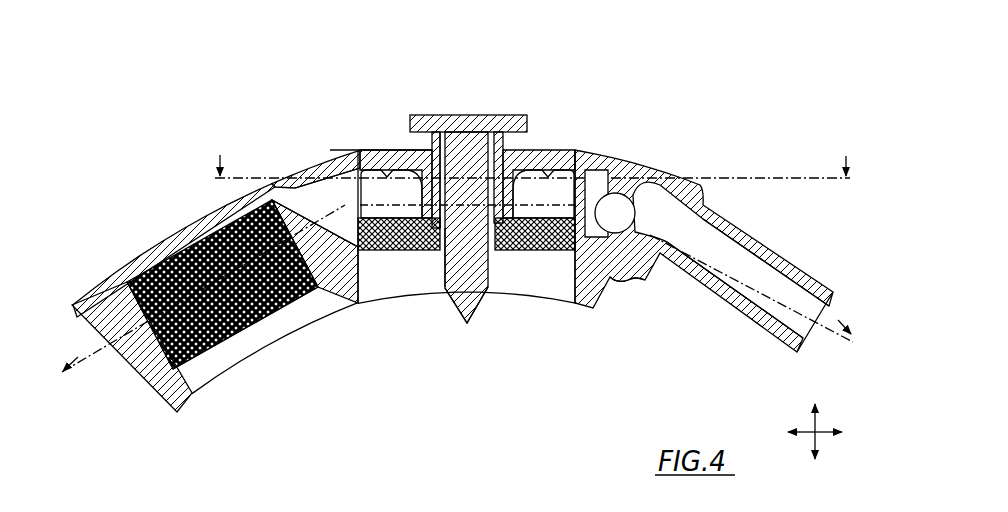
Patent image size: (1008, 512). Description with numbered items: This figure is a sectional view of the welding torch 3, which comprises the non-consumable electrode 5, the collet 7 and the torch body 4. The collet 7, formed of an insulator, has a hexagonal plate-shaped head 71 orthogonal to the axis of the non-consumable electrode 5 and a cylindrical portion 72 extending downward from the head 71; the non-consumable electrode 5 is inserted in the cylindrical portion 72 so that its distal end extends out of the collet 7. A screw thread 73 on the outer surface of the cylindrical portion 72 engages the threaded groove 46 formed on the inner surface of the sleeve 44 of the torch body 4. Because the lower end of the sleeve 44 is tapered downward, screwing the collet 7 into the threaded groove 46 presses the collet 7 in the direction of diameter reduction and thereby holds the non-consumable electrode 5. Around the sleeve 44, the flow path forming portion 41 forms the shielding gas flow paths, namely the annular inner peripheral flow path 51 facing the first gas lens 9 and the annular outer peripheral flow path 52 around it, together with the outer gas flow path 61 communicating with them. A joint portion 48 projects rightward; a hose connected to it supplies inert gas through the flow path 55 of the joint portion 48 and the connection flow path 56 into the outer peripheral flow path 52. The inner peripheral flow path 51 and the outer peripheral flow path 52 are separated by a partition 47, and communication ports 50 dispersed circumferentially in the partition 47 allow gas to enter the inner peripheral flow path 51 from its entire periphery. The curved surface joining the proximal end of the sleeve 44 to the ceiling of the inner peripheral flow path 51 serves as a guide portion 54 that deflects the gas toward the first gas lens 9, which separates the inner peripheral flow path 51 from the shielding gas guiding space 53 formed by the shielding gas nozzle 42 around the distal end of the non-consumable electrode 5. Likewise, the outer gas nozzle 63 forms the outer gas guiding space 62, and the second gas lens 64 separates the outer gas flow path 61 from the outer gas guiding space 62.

The welding torch 3 is at (750, 88).
The torch body 4 is at (620, 162).
The non-consumable electrode 5 is at (481, 296).
The collet 7 is at (429, 113).
The first gas lens 9 is at (583, 281).
The flow path forming portion 41 is at (134, 253).
The shielding gas nozzle 42 is at (355, 310).
The sleeve 44 is at (432, 236).
The threaded groove 46 is at (444, 115).
The partition 47 is at (312, 196).
The joint portion 48 is at (802, 275).
The communication port 50 is at (362, 170).
The inner peripheral flow path 51 is at (573, 166).
The outer peripheral flow path 52 is at (356, 218).
The shielding gas guiding space 53 is at (405, 272).
The guide portion 54 is at (540, 186).
The flow path 55 is at (735, 292).
The connection flow path 56 is at (646, 282).
The outer gas flow path 61 is at (283, 192).
The outer gas guiding space 62 is at (208, 369).
The outer gas nozzle 63 is at (184, 406).
The second gas lens 64 is at (216, 338).
The head 71 is at (474, 113).
The cylindrical portion 72 is at (431, 139).
The screw thread 73 is at (503, 140).